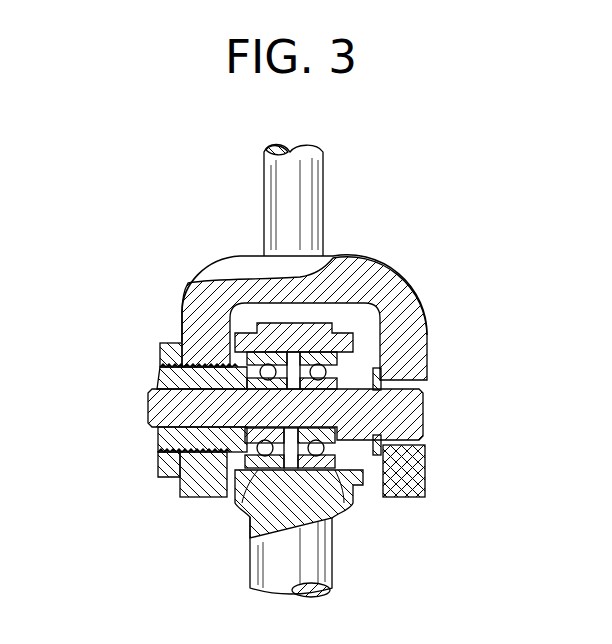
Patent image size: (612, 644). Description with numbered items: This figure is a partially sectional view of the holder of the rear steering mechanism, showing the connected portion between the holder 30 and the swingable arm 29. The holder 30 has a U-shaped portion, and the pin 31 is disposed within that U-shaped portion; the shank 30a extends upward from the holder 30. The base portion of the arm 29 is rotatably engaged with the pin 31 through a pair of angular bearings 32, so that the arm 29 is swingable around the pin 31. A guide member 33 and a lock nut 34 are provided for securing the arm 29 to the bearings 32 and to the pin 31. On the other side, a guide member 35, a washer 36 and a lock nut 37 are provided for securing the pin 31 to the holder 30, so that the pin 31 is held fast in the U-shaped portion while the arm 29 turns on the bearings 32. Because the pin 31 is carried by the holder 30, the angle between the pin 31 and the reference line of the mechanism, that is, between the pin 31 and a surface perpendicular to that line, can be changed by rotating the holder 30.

The swingable arm 29 is at (262, 562).
The holder 30 is at (365, 251).
The upper shaft 30a is at (323, 192).
The pin 31 is at (413, 428).
The angular bearings 32 is at (238, 504).
The guide member 33 is at (357, 361).
The lock nut 34 is at (355, 345).
The guide member 35 is at (158, 446).
The washer 36 is at (398, 462).
The lock nut 37 is at (160, 474).